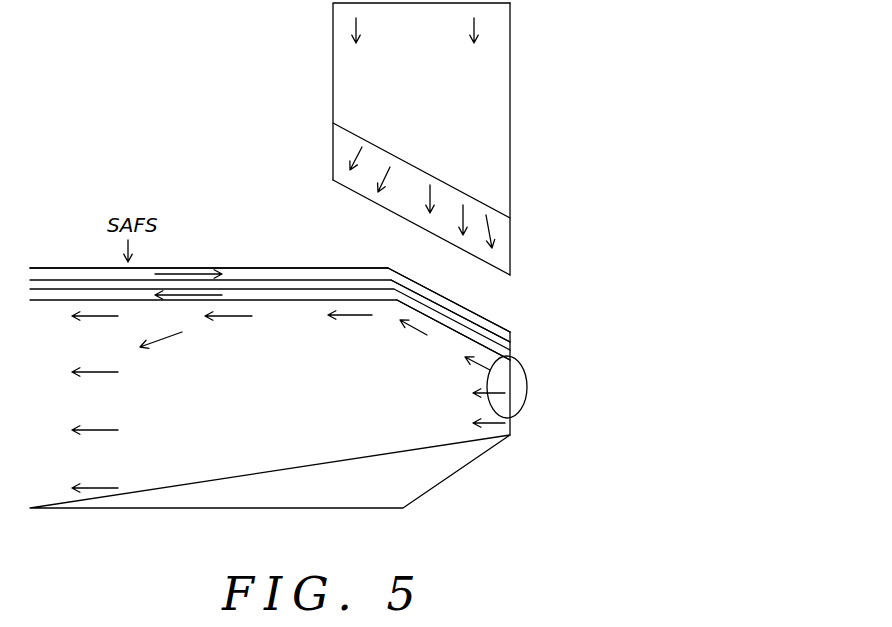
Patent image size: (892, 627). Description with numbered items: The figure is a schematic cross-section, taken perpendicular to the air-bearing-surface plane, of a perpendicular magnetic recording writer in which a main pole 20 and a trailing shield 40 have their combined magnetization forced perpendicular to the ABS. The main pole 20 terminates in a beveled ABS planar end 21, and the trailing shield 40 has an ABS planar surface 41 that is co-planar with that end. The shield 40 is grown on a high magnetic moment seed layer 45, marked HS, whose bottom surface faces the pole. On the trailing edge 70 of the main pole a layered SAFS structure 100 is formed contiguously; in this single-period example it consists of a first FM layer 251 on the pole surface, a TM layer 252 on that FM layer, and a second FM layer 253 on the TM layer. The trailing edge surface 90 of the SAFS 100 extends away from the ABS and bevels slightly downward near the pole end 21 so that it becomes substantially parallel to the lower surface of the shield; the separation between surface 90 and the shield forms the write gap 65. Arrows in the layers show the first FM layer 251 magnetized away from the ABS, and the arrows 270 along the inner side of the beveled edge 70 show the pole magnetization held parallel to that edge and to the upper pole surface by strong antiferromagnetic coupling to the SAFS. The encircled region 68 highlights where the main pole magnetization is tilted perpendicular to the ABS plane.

The trailing shield 40 is at (510, 33).
The ABS planar surface 41 is at (512, 88).
The high magnetic moment seed layer 45 is at (500, 235).
The trailing edge surface of the SAFS layer 90 is at (437, 296).
The write gap 65 is at (482, 297).
The SAFS layer 100 is at (68, 268).
The second FM layer 253 is at (245, 275).
The TM layer 252 is at (303, 285).
The first FM layer 251 is at (362, 293).
The magnetization arrows 270 is at (357, 316).
The trailing edge 70 is at (441, 331).
The contact / impingement zone 68 is at (528, 390).
The ABS planar end 21 is at (512, 430).
The main pole 20 is at (410, 487).